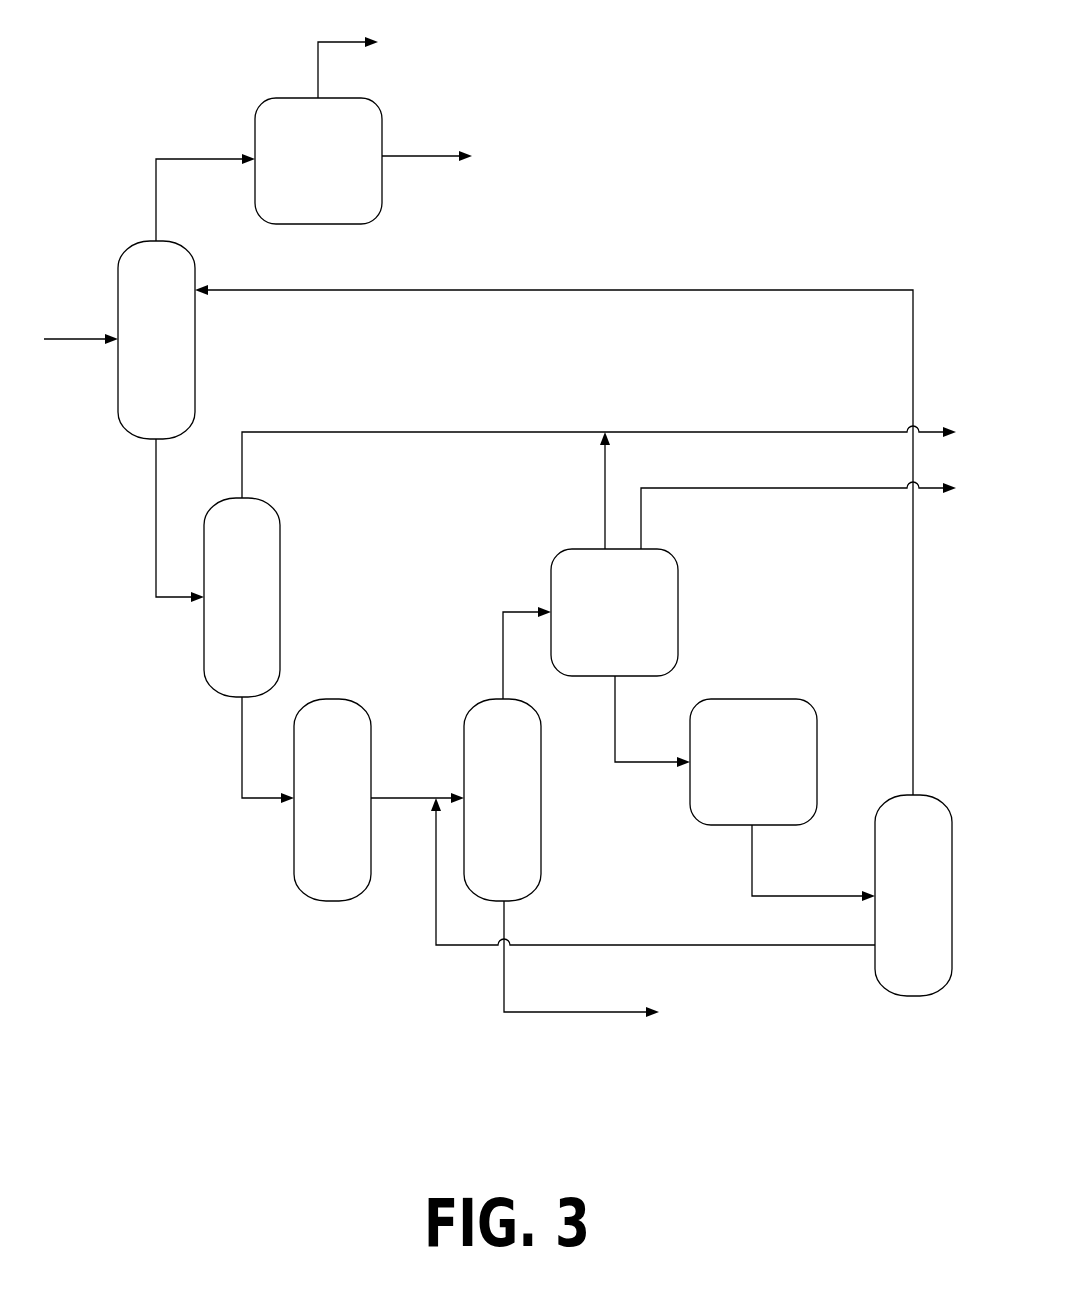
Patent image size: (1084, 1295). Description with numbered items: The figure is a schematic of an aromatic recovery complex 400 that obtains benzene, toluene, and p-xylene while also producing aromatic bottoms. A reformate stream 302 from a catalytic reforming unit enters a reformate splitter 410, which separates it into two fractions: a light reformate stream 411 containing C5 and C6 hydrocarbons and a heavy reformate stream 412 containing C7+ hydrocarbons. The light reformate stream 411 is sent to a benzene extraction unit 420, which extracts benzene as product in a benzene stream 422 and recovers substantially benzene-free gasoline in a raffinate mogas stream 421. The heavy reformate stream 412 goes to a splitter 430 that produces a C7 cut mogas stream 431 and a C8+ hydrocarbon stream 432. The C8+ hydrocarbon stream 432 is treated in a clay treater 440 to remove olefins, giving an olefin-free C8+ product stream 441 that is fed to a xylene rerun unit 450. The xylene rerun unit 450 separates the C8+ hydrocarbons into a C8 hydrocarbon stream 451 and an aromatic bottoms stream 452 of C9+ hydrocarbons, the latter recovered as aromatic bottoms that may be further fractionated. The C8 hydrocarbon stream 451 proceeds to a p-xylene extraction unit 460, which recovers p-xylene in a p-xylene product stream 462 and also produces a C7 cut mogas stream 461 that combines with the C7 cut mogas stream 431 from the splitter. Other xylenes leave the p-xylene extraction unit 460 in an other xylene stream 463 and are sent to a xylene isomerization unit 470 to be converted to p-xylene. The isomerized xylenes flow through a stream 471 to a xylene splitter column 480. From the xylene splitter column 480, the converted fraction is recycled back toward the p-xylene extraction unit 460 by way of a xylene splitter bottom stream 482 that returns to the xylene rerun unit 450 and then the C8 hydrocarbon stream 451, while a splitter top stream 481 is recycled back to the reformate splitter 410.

The reformate stream 302 is at (75, 338).
The aromatic recovery complex 400 is at (705, 164).
The reformate splitter 410 is at (137, 357).
The light reformate stream 411 is at (198, 157).
The heavy reformate stream 412 is at (156, 496).
The benzene extraction unit 420 is at (299, 177).
The raffinate motor gasoline (mogas) stream 421 is at (343, 41).
The benzene stream 422 is at (425, 155).
The splitter 430 is at (223, 611).
The C7 cut mogas stream 431 is at (412, 431).
The C8+ hydrocarbon stream 432 is at (242, 753).
The clay treater 440 is at (313, 813).
The olefin-free C8+ product stream 441 is at (408, 797).
The xylene rerun unit 450 is at (483, 813).
The C8 hydrocarbon stream 451 is at (503, 641).
The aromatic bottoms stream 452 is at (588, 1014).
The p-xylene extraction unit 460 is at (596, 627).
The C7 cut mogas stream 461 is at (605, 493).
The p-xylene product stream 462 is at (776, 489).
The other xylene stream 463 is at (640, 764).
The xylene isomerization unit 470 is at (734, 777).
The isomerized xylenes stream 471 is at (752, 875).
The xylene splitter column 480 is at (894, 910).
The splitter top stream 481 is at (549, 288).
The xylene splitter bottom stream 482 is at (467, 947).